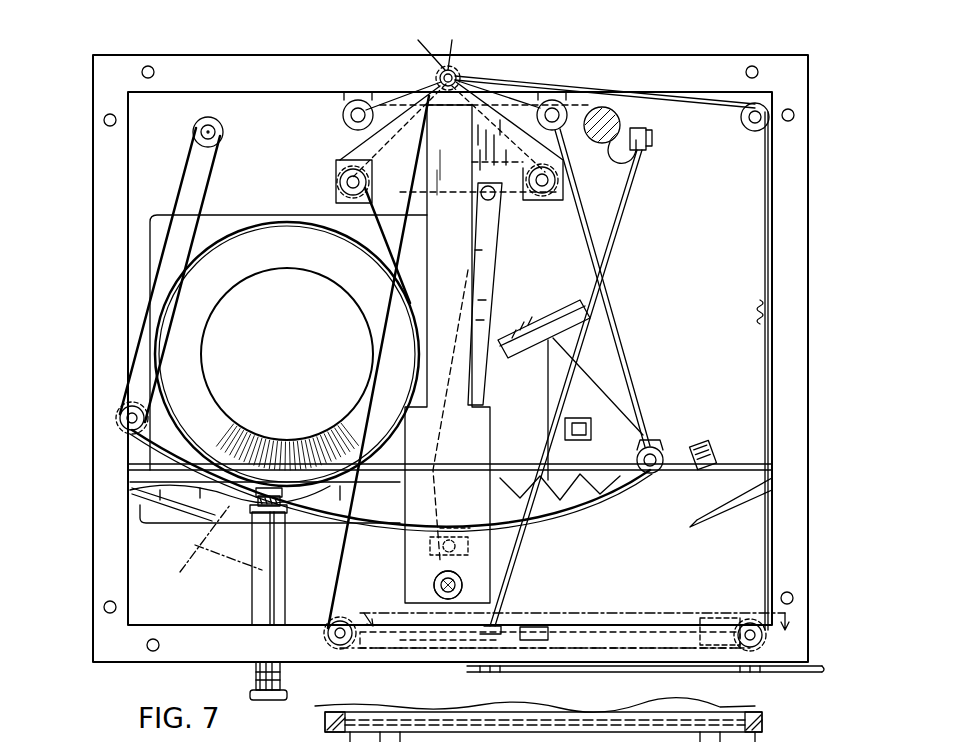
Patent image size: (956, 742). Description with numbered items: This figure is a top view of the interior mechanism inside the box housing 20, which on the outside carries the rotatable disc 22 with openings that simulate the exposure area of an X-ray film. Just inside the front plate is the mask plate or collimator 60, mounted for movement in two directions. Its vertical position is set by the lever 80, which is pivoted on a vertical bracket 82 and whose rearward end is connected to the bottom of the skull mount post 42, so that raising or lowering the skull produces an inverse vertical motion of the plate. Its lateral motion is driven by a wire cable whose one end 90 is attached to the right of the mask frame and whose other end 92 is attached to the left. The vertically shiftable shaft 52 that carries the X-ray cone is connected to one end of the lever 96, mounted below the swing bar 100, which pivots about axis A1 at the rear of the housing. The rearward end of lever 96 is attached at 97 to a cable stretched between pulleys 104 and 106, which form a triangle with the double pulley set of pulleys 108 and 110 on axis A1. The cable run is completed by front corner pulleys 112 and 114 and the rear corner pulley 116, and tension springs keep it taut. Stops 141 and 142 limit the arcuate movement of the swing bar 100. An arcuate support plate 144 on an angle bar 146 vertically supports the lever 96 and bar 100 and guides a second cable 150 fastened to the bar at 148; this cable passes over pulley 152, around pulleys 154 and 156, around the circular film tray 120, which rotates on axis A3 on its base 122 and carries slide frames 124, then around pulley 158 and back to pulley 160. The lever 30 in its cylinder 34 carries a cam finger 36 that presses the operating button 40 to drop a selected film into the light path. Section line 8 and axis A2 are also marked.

The box housing 20 is at (93, 232).
The rotatable disc 22 is at (822, 668).
The lever 30 is at (256, 698).
The cylinder 34 is at (258, 588).
The cam finger 36 is at (262, 514).
The operating button 40 is at (256, 504).
The vertical post 42 is at (618, 118).
The vertically shiftable shaft 52 is at (443, 600).
The mask plate or collimator 60 is at (632, 622).
The lever 80 is at (566, 560).
The vertical bracket 82 is at (592, 428).
The cable end 90 is at (714, 619).
The cable end 92 is at (392, 660).
The lever 96 is at (490, 305).
The attachment point 97 is at (494, 206).
The swing bar 100 is at (470, 277).
The pulley 104 is at (338, 178).
The pulley 106 is at (540, 200).
The pulley 108 is at (440, 68).
The pulley 110 is at (449, 68).
The front corner pulley 112 is at (342, 618).
The front corner pulley 114 is at (750, 618).
The rear corner pulley 116 is at (748, 130).
The circular film carrier or tray 120 is at (214, 342).
The base 122 is at (226, 215).
The slide frames 124 is at (320, 420).
The stop 141 is at (136, 508).
The stop 142 is at (762, 512).
The arcuate support plate 144 is at (580, 498).
The angle bar 146 is at (128, 480).
The fastening point 148 is at (480, 506).
The cable 150 is at (630, 346).
The pulley 152 is at (652, 446).
The pulley 154 is at (564, 106).
The pulley 156 is at (344, 120).
The pulley 158 is at (214, 117).
The pulley 160 is at (123, 394).
The section line 8- 8 is at (574, 623).
The axis A1 is at (452, 70).
The pivot axis A2 is at (462, 584).
The axis A3 is at (285, 360).